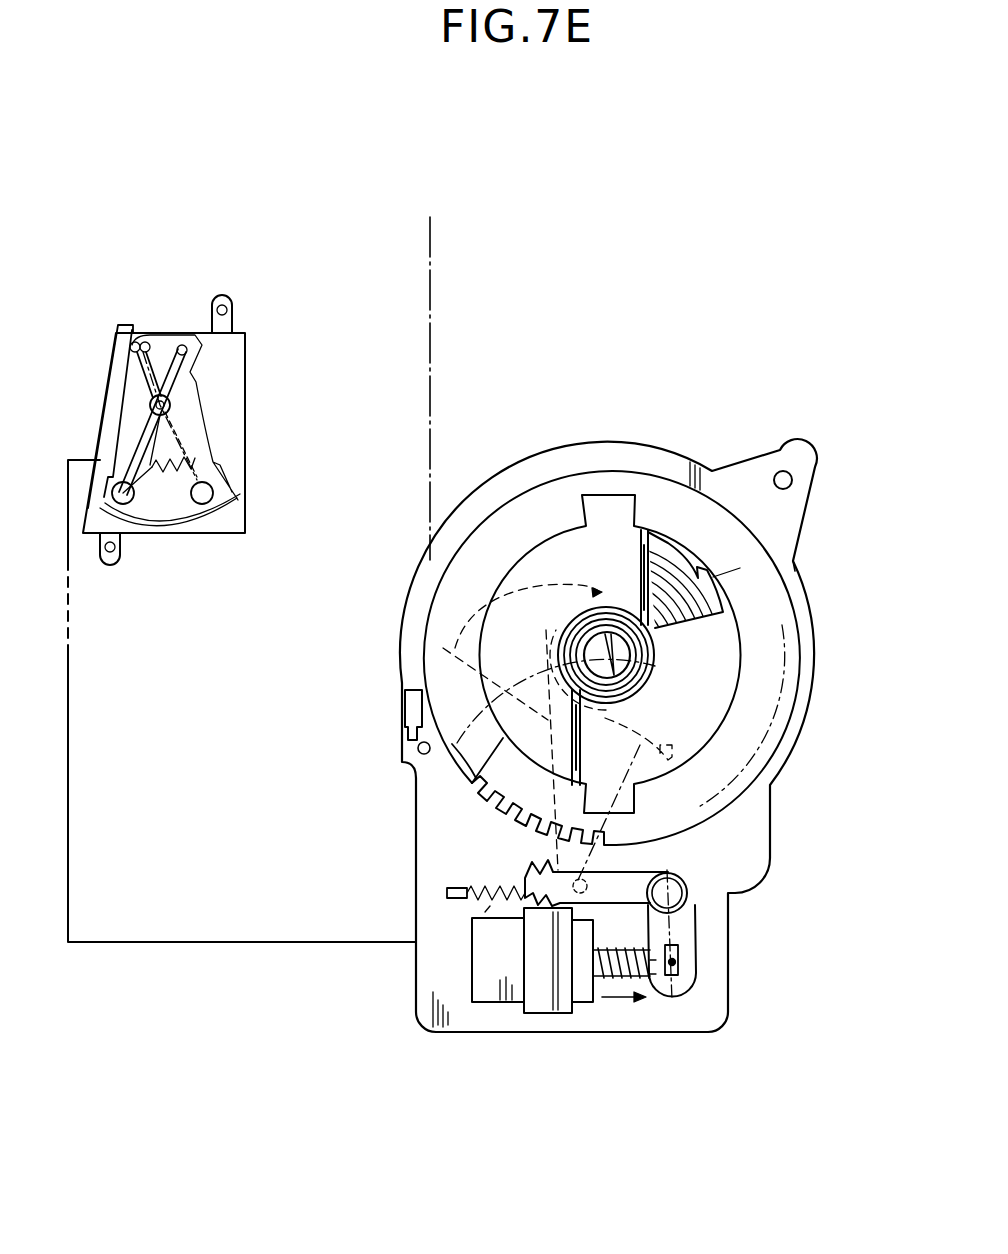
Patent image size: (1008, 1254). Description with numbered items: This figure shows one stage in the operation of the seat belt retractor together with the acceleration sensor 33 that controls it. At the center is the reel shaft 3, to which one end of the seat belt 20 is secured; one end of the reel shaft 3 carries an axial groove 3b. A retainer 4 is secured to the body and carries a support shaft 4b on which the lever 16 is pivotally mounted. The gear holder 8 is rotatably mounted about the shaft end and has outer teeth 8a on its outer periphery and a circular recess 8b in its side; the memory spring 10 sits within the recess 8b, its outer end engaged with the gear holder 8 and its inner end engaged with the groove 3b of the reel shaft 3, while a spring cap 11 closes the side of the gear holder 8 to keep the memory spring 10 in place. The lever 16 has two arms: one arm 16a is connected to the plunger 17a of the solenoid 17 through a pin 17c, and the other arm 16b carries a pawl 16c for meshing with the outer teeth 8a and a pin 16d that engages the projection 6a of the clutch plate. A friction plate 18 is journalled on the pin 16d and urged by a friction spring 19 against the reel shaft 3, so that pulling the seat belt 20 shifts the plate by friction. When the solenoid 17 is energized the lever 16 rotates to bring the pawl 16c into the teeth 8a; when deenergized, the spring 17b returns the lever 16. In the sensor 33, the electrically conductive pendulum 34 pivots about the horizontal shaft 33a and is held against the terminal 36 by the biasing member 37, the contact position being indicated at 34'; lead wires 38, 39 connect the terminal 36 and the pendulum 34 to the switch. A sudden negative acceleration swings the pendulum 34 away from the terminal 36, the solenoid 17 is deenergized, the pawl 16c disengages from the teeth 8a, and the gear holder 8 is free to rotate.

The reel shaft 3 is at (630, 652).
The axial groove 3b is at (600, 669).
The retainer 4 is at (673, 462).
The support shaft 4b is at (693, 905).
The projection 6a is at (407, 717).
The gear holder 8 is at (768, 637).
The outer teeth 8a is at (497, 812).
The circular recess 8b is at (713, 577).
The memory spring 10 is at (725, 593).
The spring cap 11 is at (713, 702).
The lever 16 is at (695, 940).
The arm 16a is at (697, 975).
The arm 16b is at (620, 880).
The pawl 16c is at (525, 875).
The pin 16d is at (603, 883).
The solenoid 17 is at (500, 1000).
The plunger 17a is at (657, 990).
The spring 17b is at (630, 978).
The pin 17c is at (680, 987).
The friction plate 18 is at (455, 650).
The friction spring 19 is at (485, 912).
The seat belt 20 is at (430, 325).
The acceleration sensor 33 is at (108, 368).
The horizontal shaft 33a is at (170, 405).
The pendulum 34 is at (128, 424).
The pendulum position 34' is at (175, 569).
The terminal 36 is at (148, 345).
The biasing member 37 is at (178, 480).
The lead wire 38 is at (255, 945).
The lead wire 39 is at (84, 510).